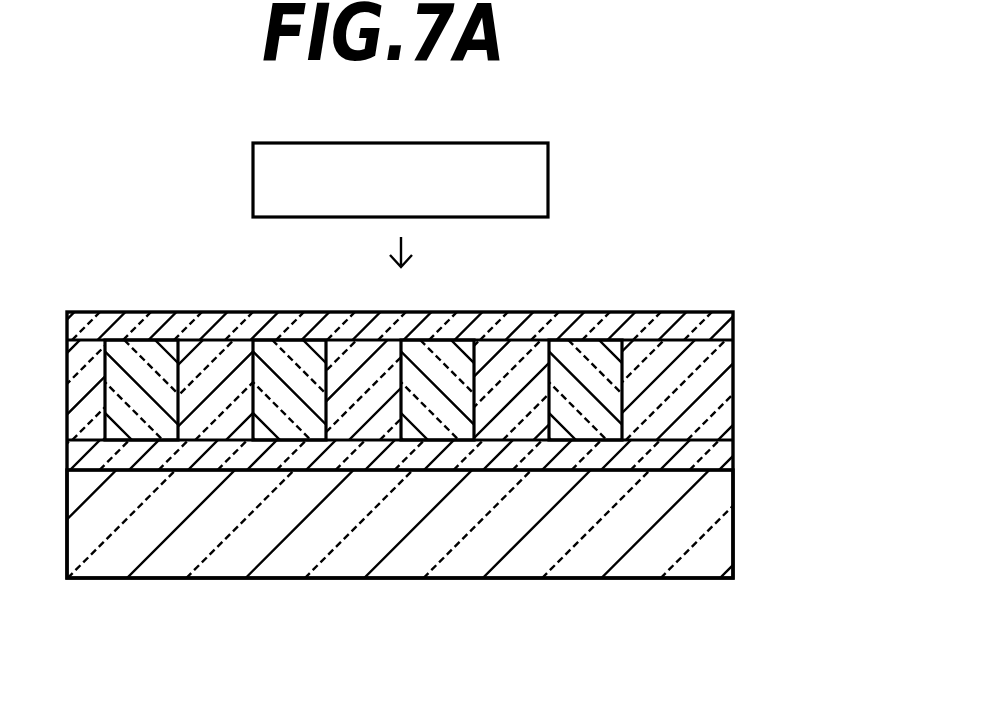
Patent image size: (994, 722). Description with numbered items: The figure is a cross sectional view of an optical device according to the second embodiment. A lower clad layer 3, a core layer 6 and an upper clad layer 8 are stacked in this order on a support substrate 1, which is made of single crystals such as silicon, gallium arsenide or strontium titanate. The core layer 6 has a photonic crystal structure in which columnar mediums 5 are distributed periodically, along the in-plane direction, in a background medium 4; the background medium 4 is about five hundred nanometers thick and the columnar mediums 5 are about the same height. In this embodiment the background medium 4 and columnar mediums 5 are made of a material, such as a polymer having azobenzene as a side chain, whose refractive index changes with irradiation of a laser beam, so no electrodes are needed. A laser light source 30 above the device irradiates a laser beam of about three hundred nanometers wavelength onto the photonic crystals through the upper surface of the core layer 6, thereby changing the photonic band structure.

The support substrate 1 is at (733, 535).
The lower clad layer 3 is at (733, 455).
The background medium 4 is at (733, 408).
The columnar mediums 5 is at (622, 375).
The core layer 6 is at (840, 332).
The upper clad layer 8 is at (733, 325).
The laser light source 30 is at (549, 175).